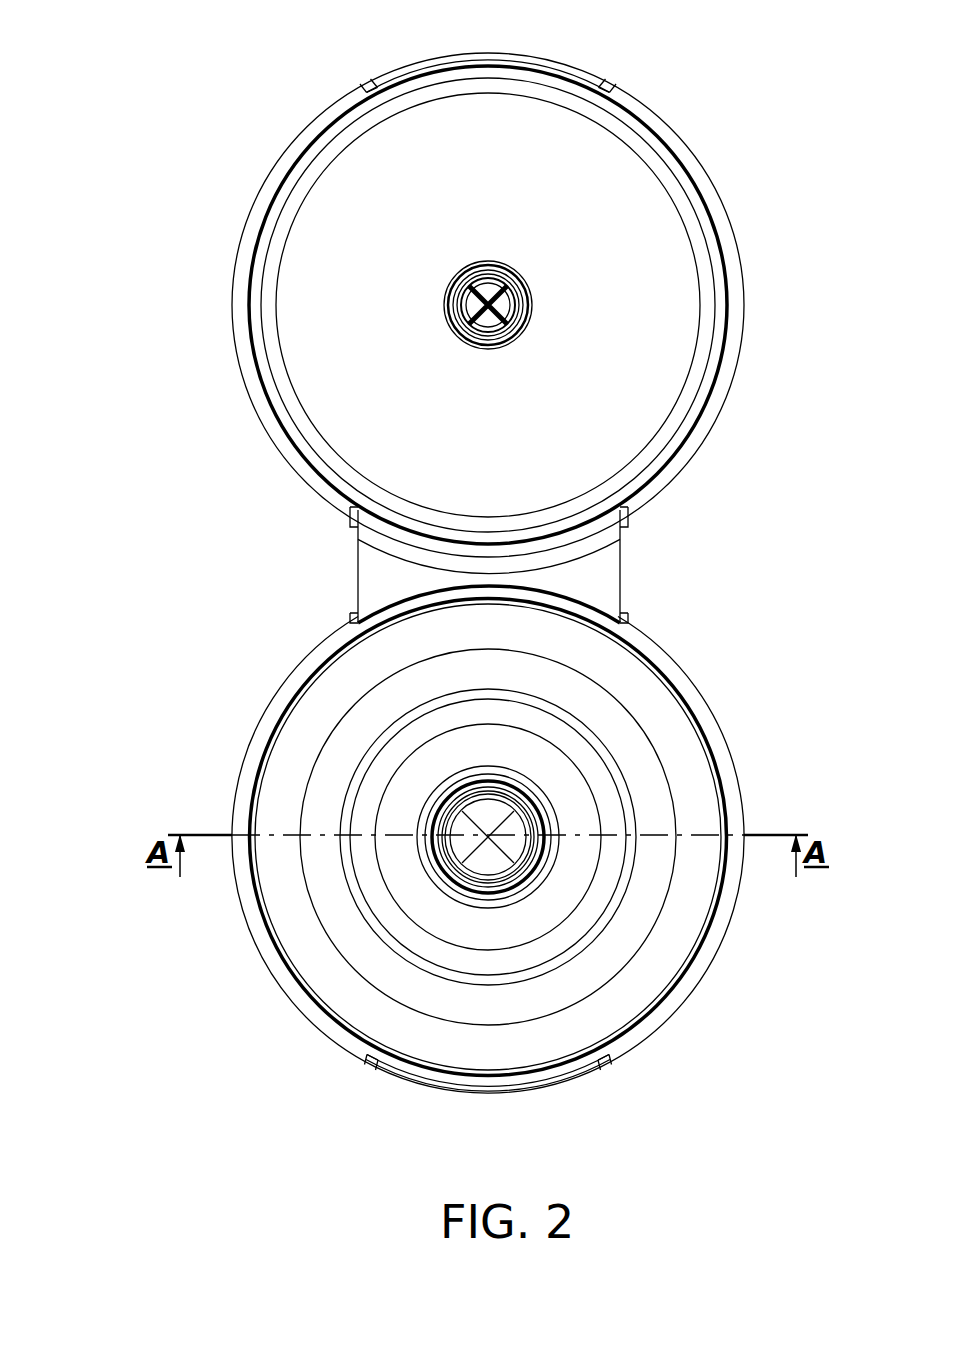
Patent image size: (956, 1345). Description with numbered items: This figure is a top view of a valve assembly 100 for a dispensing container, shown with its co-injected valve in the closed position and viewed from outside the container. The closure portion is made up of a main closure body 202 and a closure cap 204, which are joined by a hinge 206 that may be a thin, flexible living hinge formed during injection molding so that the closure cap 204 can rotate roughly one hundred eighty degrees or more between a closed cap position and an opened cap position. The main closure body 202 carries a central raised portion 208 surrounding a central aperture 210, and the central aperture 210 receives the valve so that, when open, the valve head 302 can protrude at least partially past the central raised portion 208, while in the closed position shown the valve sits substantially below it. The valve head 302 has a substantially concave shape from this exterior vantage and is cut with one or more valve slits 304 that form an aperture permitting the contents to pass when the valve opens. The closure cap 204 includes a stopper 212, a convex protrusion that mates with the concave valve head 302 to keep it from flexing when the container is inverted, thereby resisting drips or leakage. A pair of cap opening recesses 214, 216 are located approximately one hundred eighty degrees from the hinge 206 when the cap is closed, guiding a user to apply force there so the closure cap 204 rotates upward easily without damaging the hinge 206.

The valve assembly 100 is at (92, 88).
The main closure body 202 is at (700, 985).
The closure cap 204 is at (740, 368).
The hinge 206 is at (621, 562).
The central raised portion 208 is at (350, 790).
The central aperture 210 is at (455, 890).
The stopper 212 is at (514, 278).
The cap opening recess 214 is at (560, 1090).
The cap opening recess 216 is at (513, 53).
The valve head 302 is at (520, 805).
The valve slits 304 is at (500, 850).